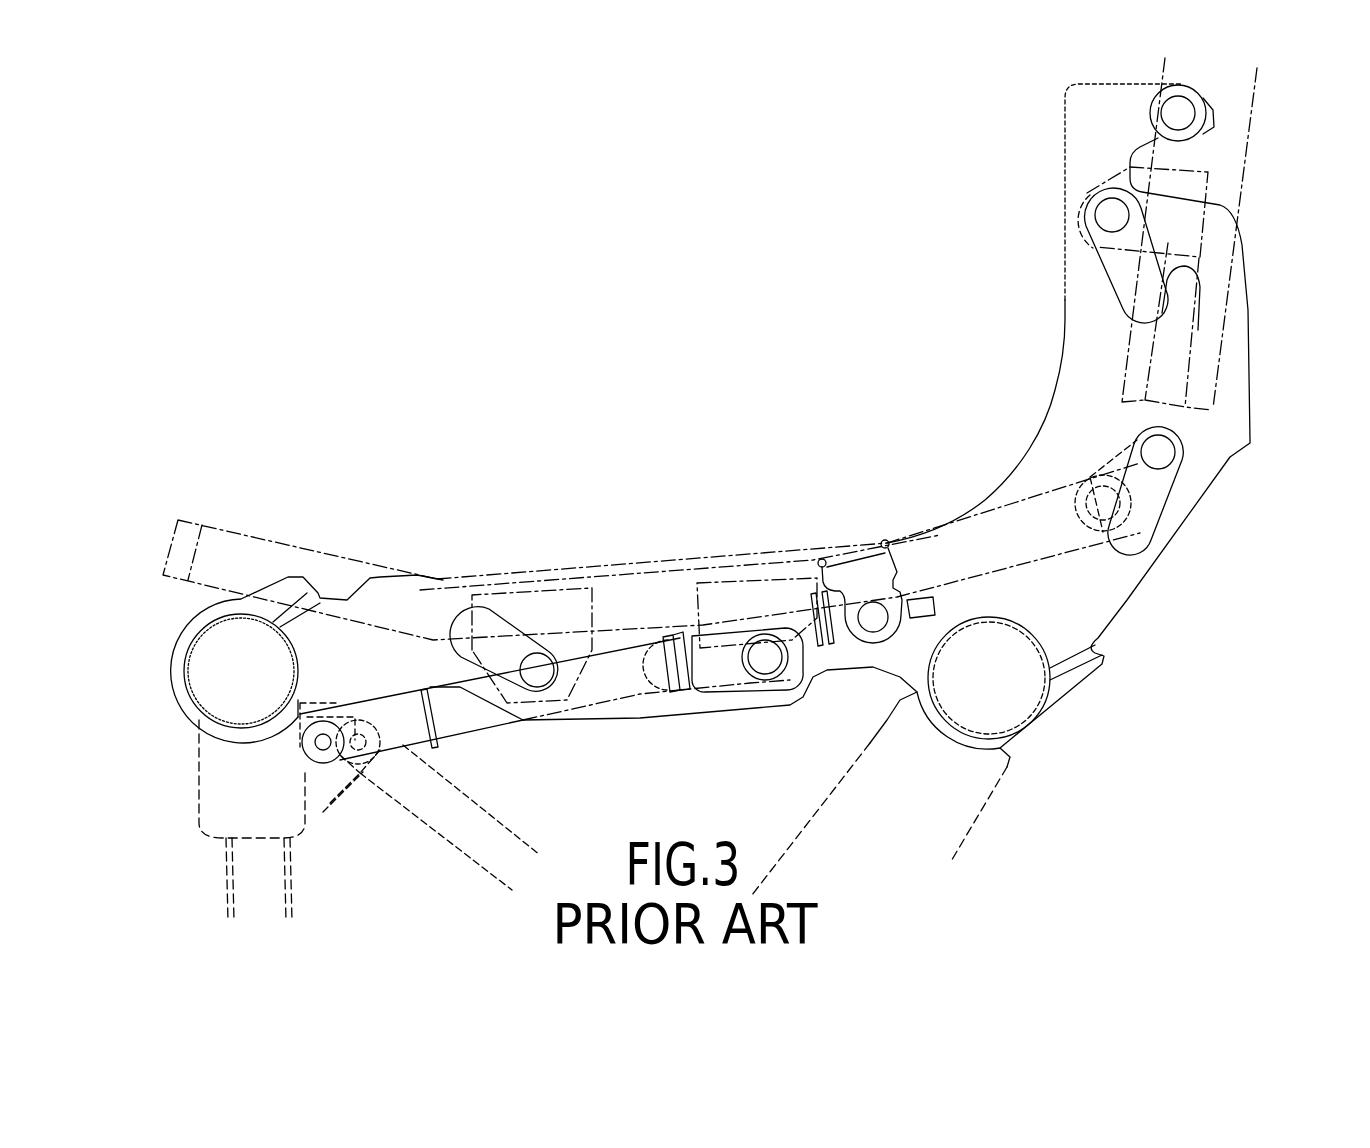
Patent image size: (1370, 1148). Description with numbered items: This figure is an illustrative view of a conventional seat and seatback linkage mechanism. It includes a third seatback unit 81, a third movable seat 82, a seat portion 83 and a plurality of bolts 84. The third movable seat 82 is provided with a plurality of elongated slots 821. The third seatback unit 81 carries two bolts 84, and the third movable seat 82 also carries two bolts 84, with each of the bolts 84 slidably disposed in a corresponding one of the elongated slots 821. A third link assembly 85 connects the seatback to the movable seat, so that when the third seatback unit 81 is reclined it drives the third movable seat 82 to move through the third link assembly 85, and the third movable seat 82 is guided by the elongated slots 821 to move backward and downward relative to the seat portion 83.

The third seatback unit 81 is at (1243, 118).
The third movable seat 82 is at (238, 545).
The seat portion 83 is at (1047, 448).
The bolt 84 is at (1103, 215).
The third link assembly 85 is at (968, 530).
The elongated slot 821 is at (1118, 270).